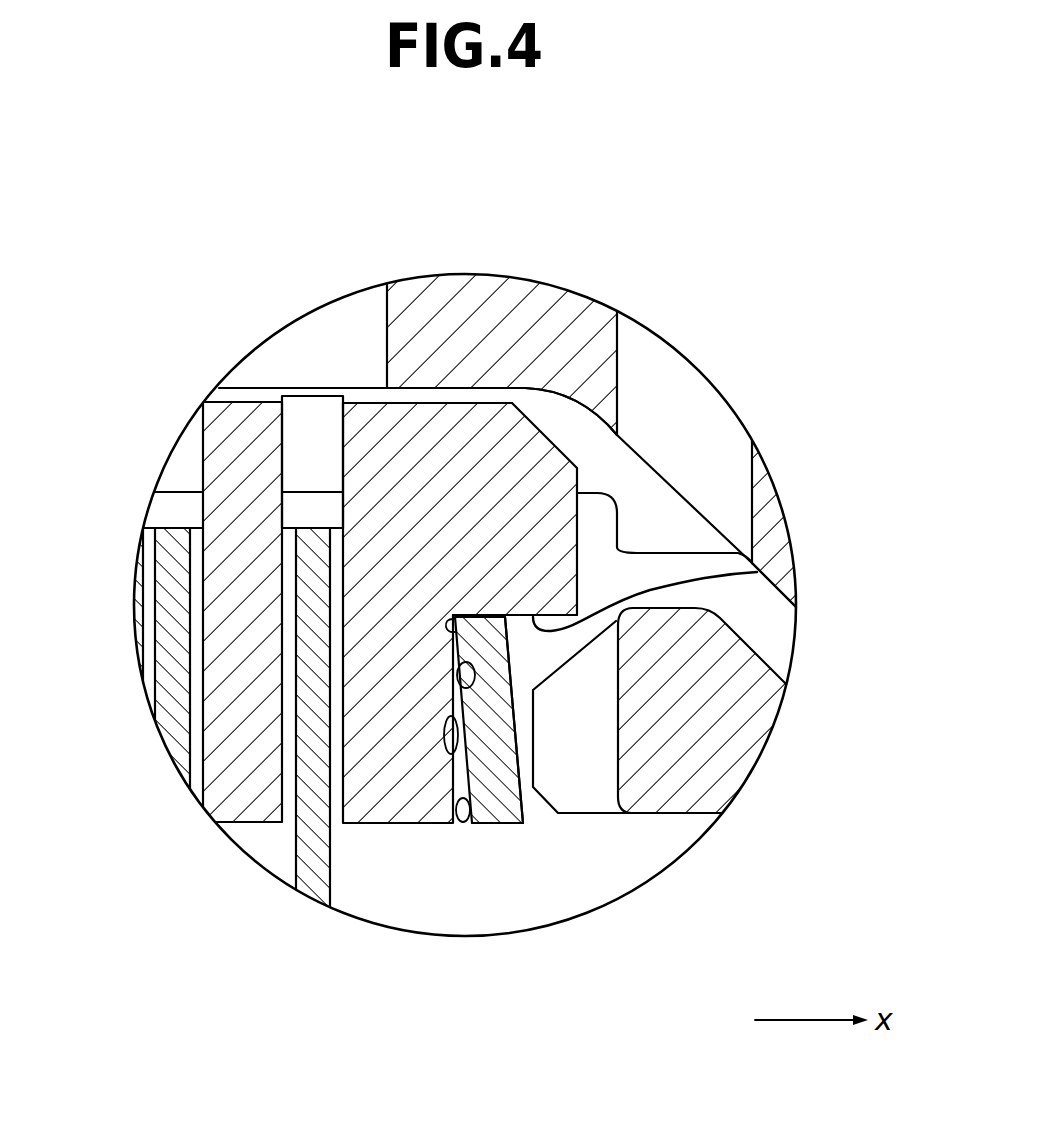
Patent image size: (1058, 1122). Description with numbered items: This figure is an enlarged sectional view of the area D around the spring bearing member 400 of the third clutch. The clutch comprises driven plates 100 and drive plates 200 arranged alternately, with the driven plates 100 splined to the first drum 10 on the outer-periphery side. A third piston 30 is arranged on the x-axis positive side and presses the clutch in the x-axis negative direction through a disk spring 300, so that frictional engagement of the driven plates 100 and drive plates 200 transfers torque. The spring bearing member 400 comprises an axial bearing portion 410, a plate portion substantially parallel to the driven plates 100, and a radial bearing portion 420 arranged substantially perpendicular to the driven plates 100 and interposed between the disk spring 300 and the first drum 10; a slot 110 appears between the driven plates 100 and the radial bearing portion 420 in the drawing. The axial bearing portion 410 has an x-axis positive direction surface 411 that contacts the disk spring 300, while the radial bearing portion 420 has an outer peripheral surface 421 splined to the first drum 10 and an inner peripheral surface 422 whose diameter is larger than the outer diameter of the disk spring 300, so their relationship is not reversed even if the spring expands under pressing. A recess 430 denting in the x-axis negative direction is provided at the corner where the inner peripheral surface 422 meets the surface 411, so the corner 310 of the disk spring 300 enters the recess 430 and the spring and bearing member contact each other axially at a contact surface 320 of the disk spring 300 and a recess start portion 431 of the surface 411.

The first drum 10 is at (430, 307).
The third piston 30 is at (738, 760).
The driven plates 100 is at (190, 443).
The slot 110 is at (340, 557).
The drive plates 200 is at (281, 858).
The disk spring 300 is at (492, 843).
The corner 310 is at (510, 640).
The contact surface 320 is at (508, 825).
The spring bearing member 400 is at (562, 431).
The axial bearing portion 410 is at (402, 771).
The x-axis positive direction surface 411 is at (448, 807).
The radial bearing portion 420 is at (531, 500).
The outer peripheral surface 421 is at (458, 403).
The inner peripheral surface 422 is at (757, 572).
The recess 430 is at (453, 615).
The recess start portion 431 is at (460, 688).
The area D is at (698, 838).